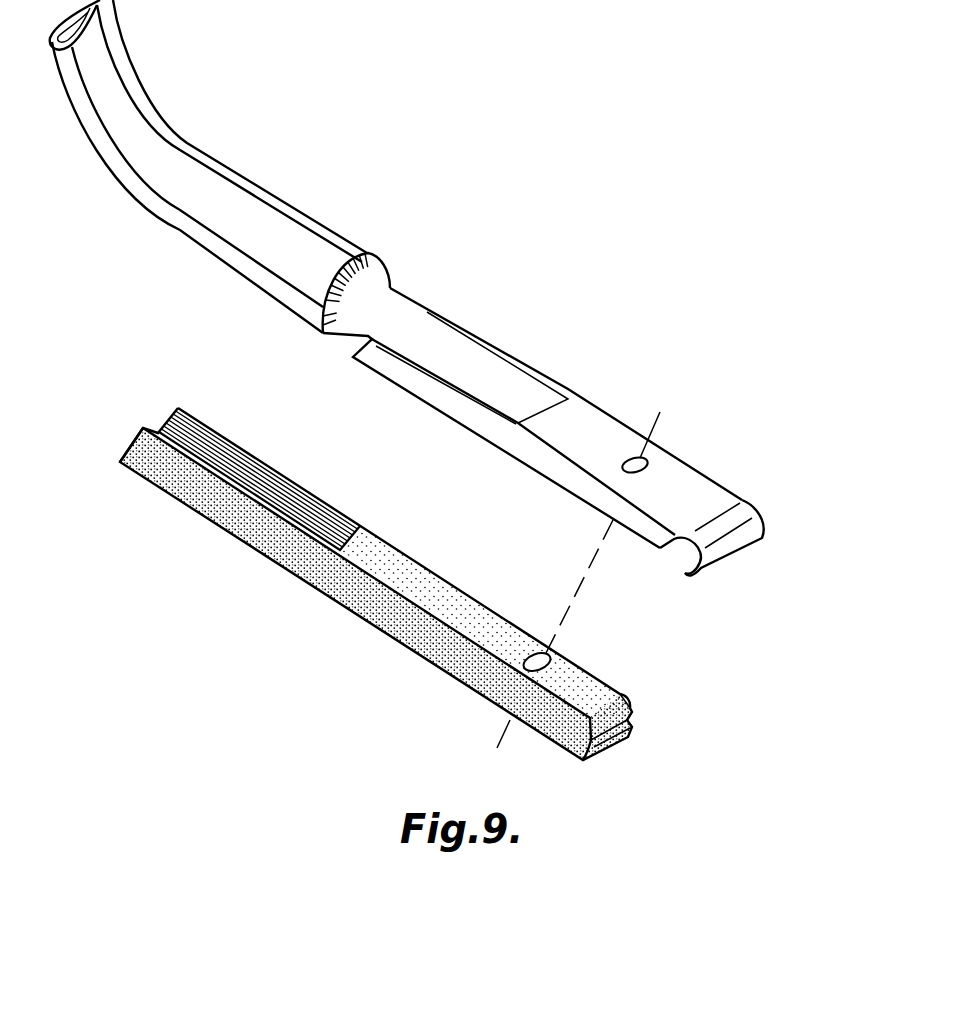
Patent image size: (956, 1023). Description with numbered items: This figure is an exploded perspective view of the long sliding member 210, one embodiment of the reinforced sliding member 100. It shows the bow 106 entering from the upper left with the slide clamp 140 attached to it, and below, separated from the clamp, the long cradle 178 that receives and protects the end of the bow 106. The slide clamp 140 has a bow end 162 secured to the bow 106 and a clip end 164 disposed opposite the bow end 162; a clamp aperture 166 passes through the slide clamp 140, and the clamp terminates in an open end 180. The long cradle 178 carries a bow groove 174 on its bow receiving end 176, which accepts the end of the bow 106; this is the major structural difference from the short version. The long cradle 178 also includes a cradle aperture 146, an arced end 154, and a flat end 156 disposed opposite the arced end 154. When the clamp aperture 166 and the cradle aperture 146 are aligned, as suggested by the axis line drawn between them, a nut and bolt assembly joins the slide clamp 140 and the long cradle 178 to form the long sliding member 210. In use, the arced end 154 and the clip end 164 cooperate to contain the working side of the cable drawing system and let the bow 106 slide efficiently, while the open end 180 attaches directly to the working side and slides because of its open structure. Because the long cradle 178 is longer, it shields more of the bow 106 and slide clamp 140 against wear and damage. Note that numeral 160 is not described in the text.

The reinforced sliding member 100 is at (666, 110).
The bow 106 is at (180, 138).
The slide clamp 140 is at (620, 417).
The cradle aperture 146 is at (550, 660).
The arced end 154 is at (632, 710).
The flat end 156 is at (54, 408).
The base member 160 is at (360, 600).
The bow end 162 is at (473, 290).
The clip end 164 is at (748, 576).
The clamp aperture 166 is at (640, 463).
The bow groove 174 is at (327, 513).
The bow receiving end 176 is at (140, 431).
The long cradle 178 is at (200, 557).
The open end 180 is at (753, 520).
The long sliding member 210 is at (527, 262).